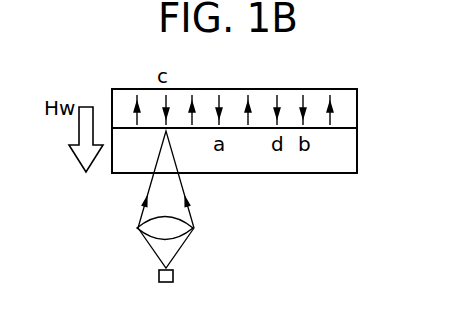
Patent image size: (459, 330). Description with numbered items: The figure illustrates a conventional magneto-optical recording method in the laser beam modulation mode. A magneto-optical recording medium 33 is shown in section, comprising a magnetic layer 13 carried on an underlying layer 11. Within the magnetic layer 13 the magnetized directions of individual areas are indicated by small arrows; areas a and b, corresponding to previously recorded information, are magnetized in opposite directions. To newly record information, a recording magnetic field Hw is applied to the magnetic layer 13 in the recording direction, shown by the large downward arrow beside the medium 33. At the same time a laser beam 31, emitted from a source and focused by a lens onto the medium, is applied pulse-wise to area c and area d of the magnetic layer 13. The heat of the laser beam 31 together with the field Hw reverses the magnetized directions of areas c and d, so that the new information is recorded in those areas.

The magneto-optical recording medium 33 is at (354, 82).
The magnetic layer 13 is at (357, 113).
The substrate 11 is at (357, 152).
The laser beam 31 is at (185, 210).